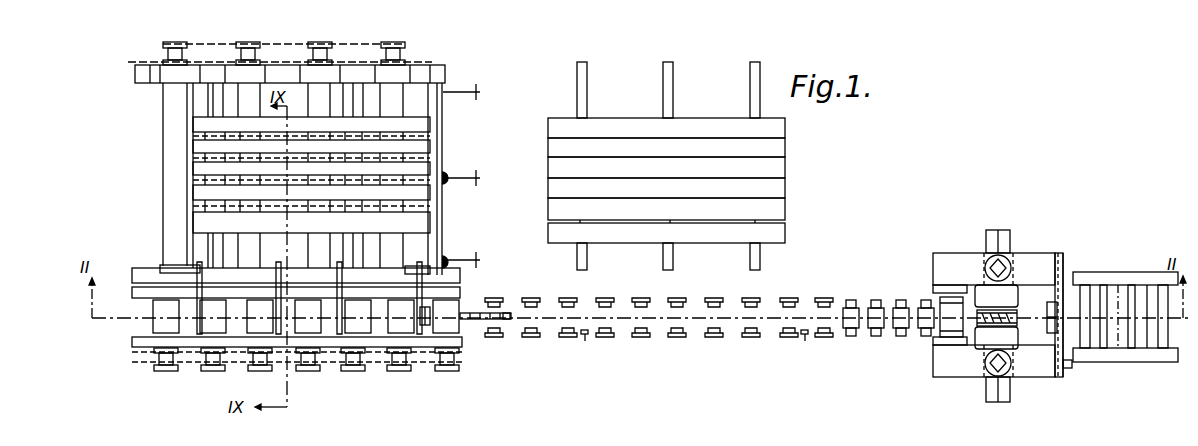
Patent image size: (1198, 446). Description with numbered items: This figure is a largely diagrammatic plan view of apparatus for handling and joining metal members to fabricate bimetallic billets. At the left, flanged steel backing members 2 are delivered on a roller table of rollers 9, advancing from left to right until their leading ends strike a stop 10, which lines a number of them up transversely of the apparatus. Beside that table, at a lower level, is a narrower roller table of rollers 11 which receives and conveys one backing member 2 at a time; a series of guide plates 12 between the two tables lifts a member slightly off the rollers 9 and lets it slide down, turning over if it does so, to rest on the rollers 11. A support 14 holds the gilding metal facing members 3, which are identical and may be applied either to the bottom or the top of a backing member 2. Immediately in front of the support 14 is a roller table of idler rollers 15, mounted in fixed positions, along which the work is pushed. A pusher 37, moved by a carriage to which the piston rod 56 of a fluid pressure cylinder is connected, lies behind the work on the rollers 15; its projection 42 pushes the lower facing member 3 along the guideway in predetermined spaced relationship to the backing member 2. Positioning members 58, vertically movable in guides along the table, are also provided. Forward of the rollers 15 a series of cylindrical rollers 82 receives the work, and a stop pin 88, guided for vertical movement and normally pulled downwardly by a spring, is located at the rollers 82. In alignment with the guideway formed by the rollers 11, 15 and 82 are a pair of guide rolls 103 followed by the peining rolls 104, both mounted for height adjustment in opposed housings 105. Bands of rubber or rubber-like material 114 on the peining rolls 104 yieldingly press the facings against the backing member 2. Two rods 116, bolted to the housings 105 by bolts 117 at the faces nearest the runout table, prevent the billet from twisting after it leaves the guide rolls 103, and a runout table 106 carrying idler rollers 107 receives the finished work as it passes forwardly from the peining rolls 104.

The flanged steel backing member 2 is at (426, 152).
The gilding metal facing member 3 is at (775, 206).
The rollers 9 is at (183, 157).
The stop 10 is at (438, 113).
The rollers 11 is at (153, 322).
The guide plates 12 is at (190, 268).
The support 14 is at (662, 87).
The idler rollers 15 is at (640, 298).
The pusher 37 is at (479, 312).
The projection 42 is at (506, 312).
The piston rod 56 is at (433, 321).
The positioning member 58 is at (585, 342).
The cylindrical rollers 82 is at (855, 306).
The stop pin 88 is at (880, 307).
The guide rolls 103 is at (942, 322).
The peining rolls 104 is at (1010, 288).
The housings 105 is at (954, 252).
The runout table 106 is at (1112, 282).
The idler rollers 107 is at (1160, 344).
The bands of rubber or rubber-like material 114 is at (1015, 312).
The rods 116 is at (1055, 345).
The bolts 117 is at (1072, 366).